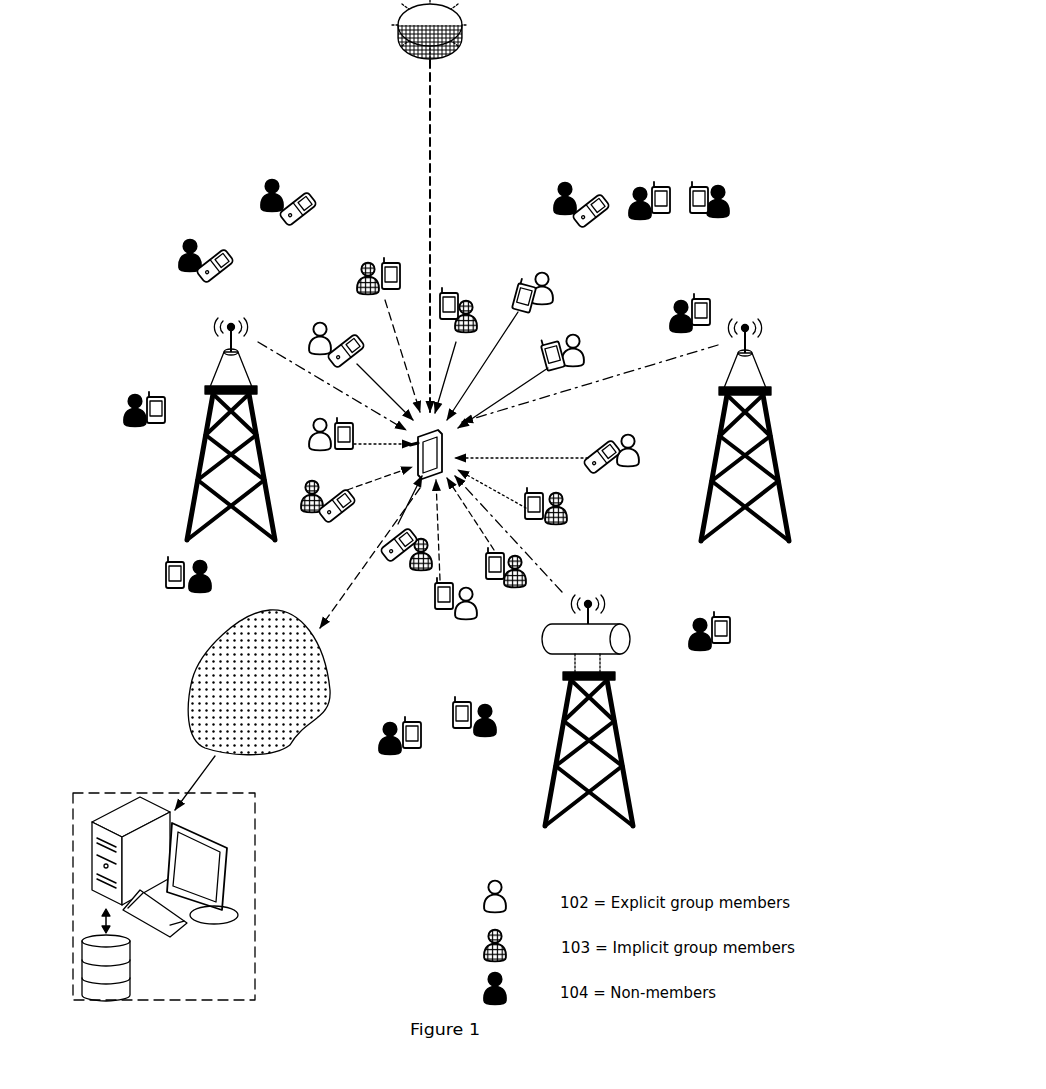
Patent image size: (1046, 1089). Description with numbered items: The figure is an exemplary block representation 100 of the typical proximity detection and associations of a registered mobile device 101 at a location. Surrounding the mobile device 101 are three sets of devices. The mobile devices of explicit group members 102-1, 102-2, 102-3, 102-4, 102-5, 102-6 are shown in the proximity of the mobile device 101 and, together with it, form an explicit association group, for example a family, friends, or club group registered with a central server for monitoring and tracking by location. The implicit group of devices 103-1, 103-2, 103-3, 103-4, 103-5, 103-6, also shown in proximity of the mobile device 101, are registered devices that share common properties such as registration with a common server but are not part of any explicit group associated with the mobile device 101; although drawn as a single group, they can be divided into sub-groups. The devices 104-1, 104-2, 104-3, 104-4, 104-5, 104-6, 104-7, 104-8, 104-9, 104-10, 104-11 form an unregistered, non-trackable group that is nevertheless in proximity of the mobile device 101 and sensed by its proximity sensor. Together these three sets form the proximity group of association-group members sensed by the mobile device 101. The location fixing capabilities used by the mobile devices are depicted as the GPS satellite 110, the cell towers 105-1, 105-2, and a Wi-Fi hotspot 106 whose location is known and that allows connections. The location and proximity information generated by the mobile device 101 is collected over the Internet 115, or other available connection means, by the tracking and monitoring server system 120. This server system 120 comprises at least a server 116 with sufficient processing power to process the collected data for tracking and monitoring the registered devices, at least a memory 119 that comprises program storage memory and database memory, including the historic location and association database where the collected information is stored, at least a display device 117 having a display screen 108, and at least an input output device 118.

The block representation 100 is at (590, 115).
The mobile device 101 is at (443, 455).
The explicit group member mobile device 102-1 is at (318, 324).
The explicit group member mobile device 102-2 is at (552, 284).
The explicit group member mobile device 102-3 is at (581, 338).
The explicit group member mobile device 102-4 is at (627, 468).
The explicit group member mobile device 102-5 is at (461, 622).
The explicit group member mobile device 102-6 is at (316, 424).
The implicit group member device 103-1 is at (366, 264).
The implicit group member device 103-2 is at (460, 300).
The implicit group member device 103-3 is at (563, 523).
The implicit group member device 103-4 is at (513, 592).
The implicit group member device 103-5 is at (411, 571).
The implicit group member device 103-6 is at (309, 486).
The unregistered device 104-1 is at (270, 182).
The unregistered device 104-2 is at (560, 184).
The unregistered device 104-3 is at (636, 191).
The unregistered device 104-4 is at (718, 220).
The unregistered device 104-5 is at (677, 303).
The unregistered device 104-6 is at (697, 624).
The unregistered device 104-7 is at (482, 742).
The unregistered device 104-8 is at (387, 728).
The unregistered device 104-9 is at (198, 596).
The unregistered device 104-10 is at (129, 397).
The unregistered device 104-11 is at (192, 243).
The cell tower 105-1 is at (750, 345).
The cell tower 105-2 is at (225, 345).
The Wi-Fi hotspot 106 is at (628, 655).
The display screen 108 is at (215, 828).
The GPS satellite 110 is at (420, 56).
The Internet 115 is at (305, 720).
The server 116 is at (110, 810).
The display device 117 is at (222, 872).
The input output device 118 is at (195, 920).
The memory 119 is at (130, 985).
The tracking and monitoring server system (TMSS) 120 is at (238, 790).